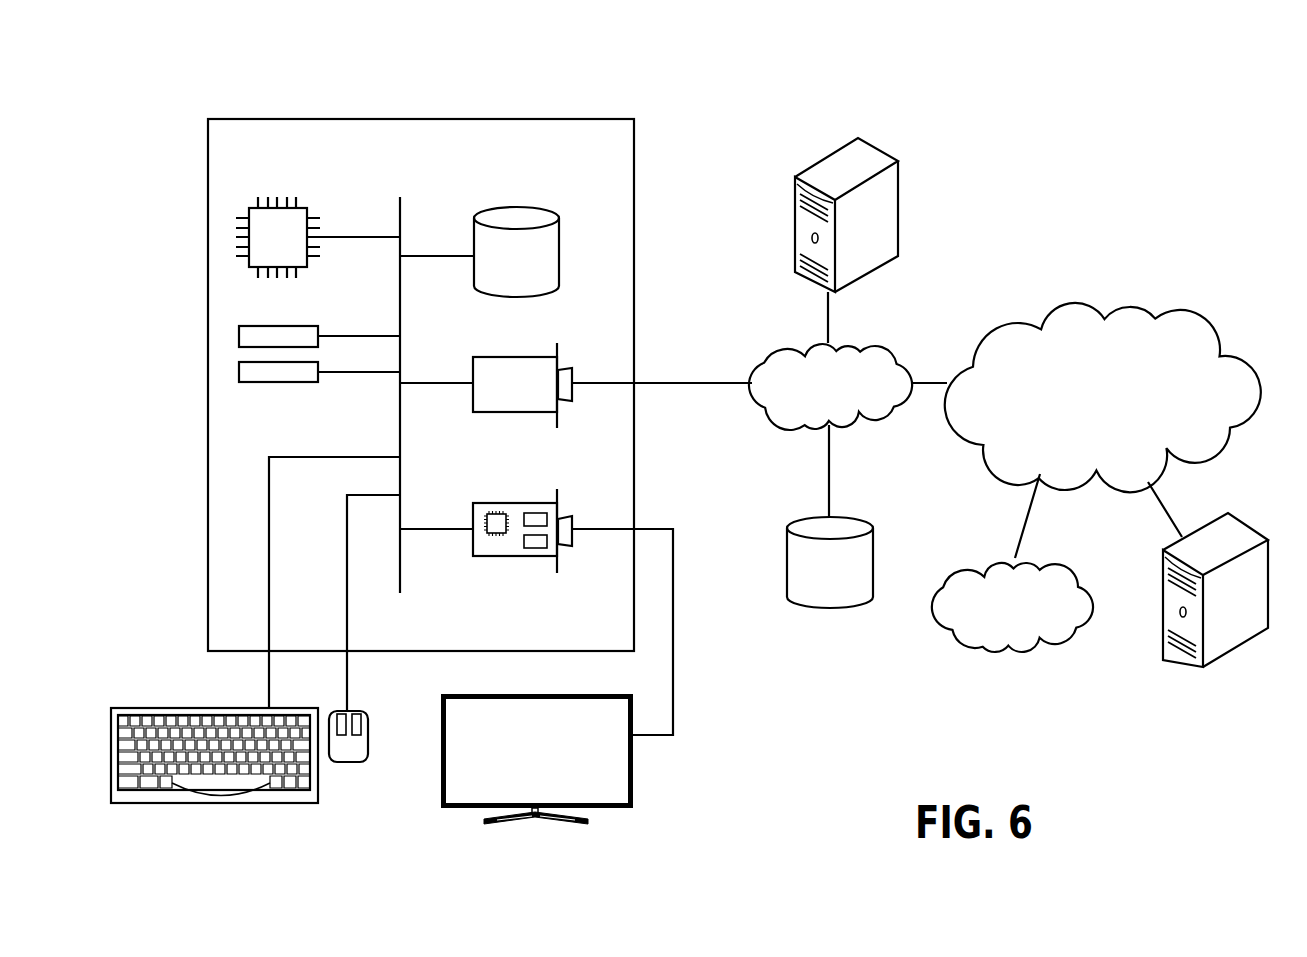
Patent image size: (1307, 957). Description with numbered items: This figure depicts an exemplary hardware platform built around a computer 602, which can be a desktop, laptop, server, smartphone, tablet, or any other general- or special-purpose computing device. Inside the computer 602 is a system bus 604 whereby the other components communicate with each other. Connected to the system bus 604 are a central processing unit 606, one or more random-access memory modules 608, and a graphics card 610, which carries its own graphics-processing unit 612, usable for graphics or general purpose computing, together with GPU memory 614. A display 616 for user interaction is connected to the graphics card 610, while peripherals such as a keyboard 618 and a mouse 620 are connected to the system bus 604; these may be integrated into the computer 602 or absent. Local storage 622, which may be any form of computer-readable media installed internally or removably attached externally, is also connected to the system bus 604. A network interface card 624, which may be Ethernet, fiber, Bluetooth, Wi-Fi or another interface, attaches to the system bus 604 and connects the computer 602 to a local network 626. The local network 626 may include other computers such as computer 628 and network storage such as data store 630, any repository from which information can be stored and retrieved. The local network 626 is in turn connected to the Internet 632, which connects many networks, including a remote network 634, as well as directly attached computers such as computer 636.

The computer 602 is at (588, 118).
The system bus 604 is at (401, 208).
The central processing unit 606 is at (304, 208).
The random-access memory modules 608 is at (320, 368).
The graphics card 610 is at (536, 596).
The graphics-processing unit 612 is at (496, 537).
The GPU memory 614 is at (534, 548).
The display 616 is at (634, 790).
The keyboard 618 is at (217, 804).
The mouse 620 is at (348, 766).
The local storage 622 is at (559, 241).
The network interface card 624 is at (473, 366).
The local network 626 is at (889, 351).
The computer 628 is at (888, 157).
The data store 630 is at (868, 521).
The Internet 632 is at (1148, 305).
The remote network 634 is at (1071, 568).
The computer 636 is at (1242, 523).